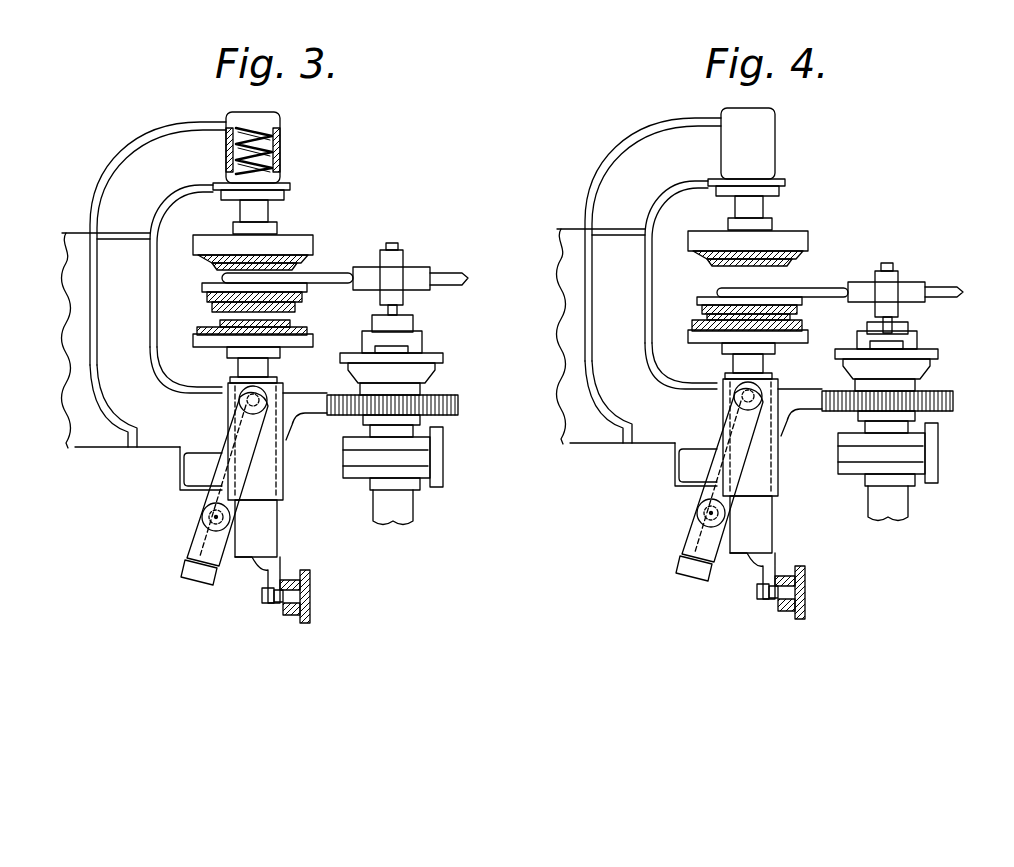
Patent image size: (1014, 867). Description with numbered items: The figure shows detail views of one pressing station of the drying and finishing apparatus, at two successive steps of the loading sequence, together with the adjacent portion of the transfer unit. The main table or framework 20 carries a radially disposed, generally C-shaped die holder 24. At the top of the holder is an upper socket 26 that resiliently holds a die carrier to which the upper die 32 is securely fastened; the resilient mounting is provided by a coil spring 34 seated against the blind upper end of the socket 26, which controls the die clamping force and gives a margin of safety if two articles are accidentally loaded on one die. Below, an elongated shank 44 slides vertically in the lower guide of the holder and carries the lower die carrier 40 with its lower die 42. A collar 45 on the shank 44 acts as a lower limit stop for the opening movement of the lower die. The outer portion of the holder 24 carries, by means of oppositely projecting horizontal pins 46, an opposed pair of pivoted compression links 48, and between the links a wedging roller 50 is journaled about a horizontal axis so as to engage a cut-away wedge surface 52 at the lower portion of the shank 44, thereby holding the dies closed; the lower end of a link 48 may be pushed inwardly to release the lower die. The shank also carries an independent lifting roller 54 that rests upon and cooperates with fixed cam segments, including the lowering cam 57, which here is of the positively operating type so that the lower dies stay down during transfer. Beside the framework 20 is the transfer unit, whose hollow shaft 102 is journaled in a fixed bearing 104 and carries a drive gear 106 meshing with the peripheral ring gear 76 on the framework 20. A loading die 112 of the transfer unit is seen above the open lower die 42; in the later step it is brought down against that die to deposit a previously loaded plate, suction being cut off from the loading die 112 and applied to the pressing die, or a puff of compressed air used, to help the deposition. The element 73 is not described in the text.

In FIG. 3, the main table or framework 20 is at (77, 243).
In FIG. 4, the main table or framework 20 is at (611, 319).
In FIG. 3, the die holder 24 is at (147, 283).
In FIG. 4, the die holder 24 is at (653, 302).
In FIG. 3, the upper socket 26 is at (283, 163).
In FIG. 4, the upper socket 26 is at (777, 169).
In FIG. 3, the coil spring 34 is at (279, 140).
In FIG. 3, the upper die 32 is at (313, 248).
In FIG. 4, the upper die 32 is at (775, 248).
In FIG. 3, the loading die 112 is at (203, 306).
In FIG. 4, the loading die 112 is at (724, 314).
In FIG. 3, the lower die 42 is at (306, 328).
In FIG. 4, the lower die 42 is at (769, 314).
In FIG. 3, the lower die carrier 40 is at (313, 342).
In FIG. 4, the lower die carrier 40 is at (770, 332).
In FIG. 3, the shank 44 is at (262, 369).
In FIG. 4, the shank 44 is at (769, 358).
In FIG. 3, the collar 45 is at (277, 382).
In FIG. 4, the collar 45 is at (775, 377).
In FIG. 3, the horizontal pin 46 is at (255, 404).
In FIG. 4, the horizontal pin 46 is at (730, 422).
In FIG. 3, the compression link 48 is at (196, 543).
In FIG. 4, the compression link 48 is at (697, 475).
In FIG. 3, the wedging roller 50 is at (203, 511).
In FIG. 4, the wedging roller 50 is at (686, 510).
In FIG. 3, the lever foot 73 is at (199, 582).
In FIG. 4, the lever foot 73 is at (692, 590).
In FIG. 3, the wedge surface 52 is at (273, 573).
In FIG. 4, the wedge surface 52 is at (746, 560).
In FIG. 3, the lifting roller 54 is at (297, 617).
In FIG. 3, the lowering cam 57 is at (311, 599).
In FIG. 4, the lowering cam 57 is at (807, 592).
In FIG. 3, the peripheral ring gear 76 is at (326, 414).
In FIG. 4, the peripheral ring gear 76 is at (805, 421).
In FIG. 3, the drive gear 106 is at (458, 405).
In FIG. 4, the drive gear 106 is at (913, 398).
In FIG. 3, the fixed bearing 104 is at (417, 459).
In FIG. 4, the fixed bearing 104 is at (921, 453).
In FIG. 4, the hollow shaft 102 is at (923, 504).